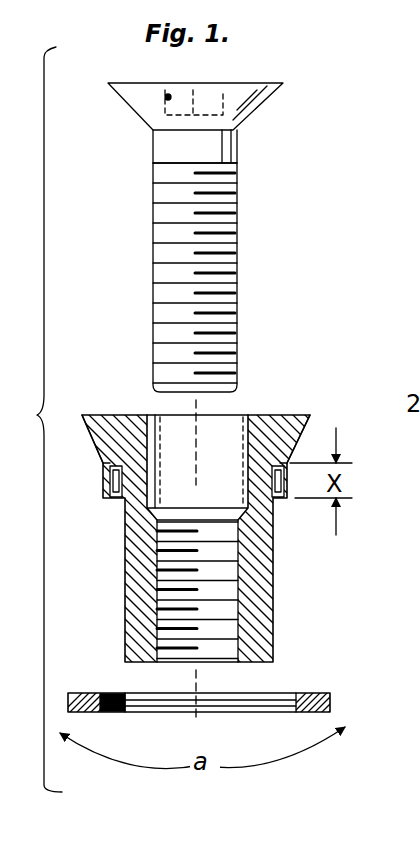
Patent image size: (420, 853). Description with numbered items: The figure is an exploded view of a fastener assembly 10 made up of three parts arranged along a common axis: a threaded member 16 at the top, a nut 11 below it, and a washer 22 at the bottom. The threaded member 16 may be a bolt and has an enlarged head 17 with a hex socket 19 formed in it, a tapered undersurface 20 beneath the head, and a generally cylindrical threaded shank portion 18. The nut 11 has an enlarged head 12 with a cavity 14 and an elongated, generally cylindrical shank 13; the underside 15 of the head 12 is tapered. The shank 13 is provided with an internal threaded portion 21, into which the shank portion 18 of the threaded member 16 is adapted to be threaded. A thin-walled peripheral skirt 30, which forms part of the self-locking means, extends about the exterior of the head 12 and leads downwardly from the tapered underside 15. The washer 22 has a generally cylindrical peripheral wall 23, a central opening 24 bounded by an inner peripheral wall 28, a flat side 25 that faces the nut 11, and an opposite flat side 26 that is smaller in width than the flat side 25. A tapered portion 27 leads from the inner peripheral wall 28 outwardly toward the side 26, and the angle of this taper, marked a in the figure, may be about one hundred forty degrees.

The fastener assembly 10 is at (33, 419).
The nut 11 is at (210, 515).
The enlarged head 12 is at (283, 410).
The elongated shank 13 is at (262, 630).
The cavity 14 is at (150, 413).
The underside of head 15 is at (90, 434).
The threaded member 16 is at (212, 237).
The enlarged head 17 is at (258, 106).
The threaded shank portion 18 is at (190, 277).
The hex socket 19 is at (168, 97).
The tapered undersurface 20 is at (150, 125).
The internal threaded portion 21 is at (173, 600).
The washer 22 is at (238, 736).
The peripheral wall 23 is at (335, 698).
The central opening 24 is at (250, 690).
The flat side 25 is at (105, 652).
The flat side 26 is at (340, 715).
The tapered portion 27 is at (300, 712).
The inner peripheral wall 28 is at (120, 713).
The peripheral skirt 30 is at (102, 498).